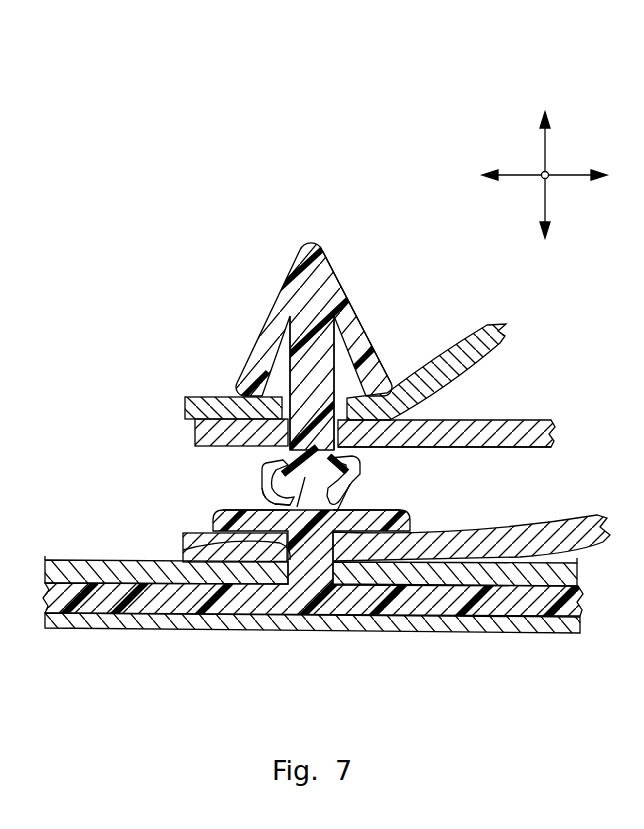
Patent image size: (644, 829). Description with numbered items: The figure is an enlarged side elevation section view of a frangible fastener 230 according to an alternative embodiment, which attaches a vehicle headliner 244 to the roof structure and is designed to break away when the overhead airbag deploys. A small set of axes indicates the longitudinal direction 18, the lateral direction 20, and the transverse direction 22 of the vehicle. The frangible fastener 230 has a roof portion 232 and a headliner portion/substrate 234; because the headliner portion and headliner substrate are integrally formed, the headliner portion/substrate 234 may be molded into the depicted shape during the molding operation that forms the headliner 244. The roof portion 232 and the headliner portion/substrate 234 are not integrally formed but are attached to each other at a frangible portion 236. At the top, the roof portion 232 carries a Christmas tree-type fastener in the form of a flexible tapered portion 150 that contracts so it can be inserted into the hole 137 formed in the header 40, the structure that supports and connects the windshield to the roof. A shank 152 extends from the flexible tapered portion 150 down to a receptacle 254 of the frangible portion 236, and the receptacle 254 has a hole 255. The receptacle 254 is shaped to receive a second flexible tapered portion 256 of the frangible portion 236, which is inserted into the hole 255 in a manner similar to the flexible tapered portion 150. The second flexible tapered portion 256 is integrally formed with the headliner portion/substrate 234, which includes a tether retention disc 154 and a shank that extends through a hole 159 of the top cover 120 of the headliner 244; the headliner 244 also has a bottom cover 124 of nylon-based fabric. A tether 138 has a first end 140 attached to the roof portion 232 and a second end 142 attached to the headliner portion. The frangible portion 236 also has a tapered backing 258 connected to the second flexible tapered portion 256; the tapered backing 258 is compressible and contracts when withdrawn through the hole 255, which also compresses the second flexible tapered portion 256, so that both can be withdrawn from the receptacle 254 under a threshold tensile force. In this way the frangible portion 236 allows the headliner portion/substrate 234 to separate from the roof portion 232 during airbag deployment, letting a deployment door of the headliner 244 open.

The longitudinal direction 18 is at (572, 170).
The lateral direction 20 is at (542, 178).
The transverse direction 22 is at (548, 140).
The header 40 is at (200, 400).
The top cover 120 is at (560, 580).
The bottom cover 124 is at (523, 633).
The hole 137 is at (290, 396).
The tether 138 is at (487, 420).
The first end 140 is at (197, 432).
The second end 142 is at (183, 537).
The flexible tapered portion 150 is at (287, 277).
The shank 152 is at (324, 366).
The tether retention disc 154 is at (217, 511).
The hole 159 is at (183, 550).
The frangible fastener 230 is at (356, 248).
The roof portion 232 is at (381, 320).
The headliner portion/substrate 234 is at (222, 620).
The frangible portion 236 is at (453, 467).
The headliner 244 is at (395, 665).
The receptacle 254 is at (358, 457).
The hole 255 is at (255, 500).
The second flexible tapered portion 256 is at (255, 459).
The tapered backing 258 is at (345, 482).